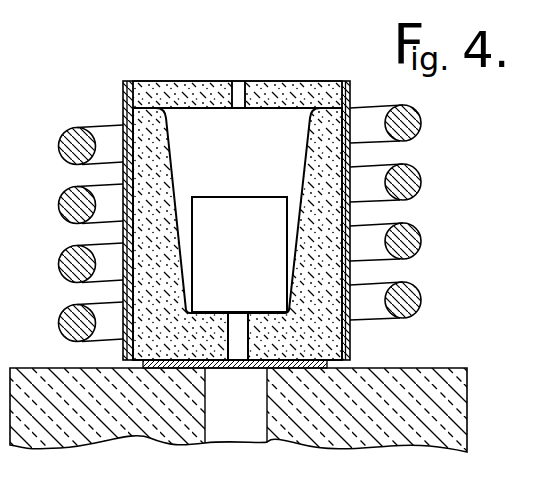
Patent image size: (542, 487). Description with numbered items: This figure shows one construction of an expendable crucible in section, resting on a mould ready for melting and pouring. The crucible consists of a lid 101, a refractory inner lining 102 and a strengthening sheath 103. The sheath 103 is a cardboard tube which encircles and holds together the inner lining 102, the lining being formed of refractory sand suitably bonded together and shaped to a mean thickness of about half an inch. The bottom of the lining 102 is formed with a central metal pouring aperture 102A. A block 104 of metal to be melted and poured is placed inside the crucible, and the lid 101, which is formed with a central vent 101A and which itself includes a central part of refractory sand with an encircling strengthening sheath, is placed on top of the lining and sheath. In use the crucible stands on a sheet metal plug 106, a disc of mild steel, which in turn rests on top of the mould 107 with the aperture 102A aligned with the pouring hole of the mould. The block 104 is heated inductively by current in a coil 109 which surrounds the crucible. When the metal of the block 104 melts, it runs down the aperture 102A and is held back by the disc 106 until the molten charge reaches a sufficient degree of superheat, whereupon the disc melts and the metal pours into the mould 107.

The lid 101 is at (176, 74).
The central vent 101A is at (243, 82).
The refractory inner lining 102 is at (148, 163).
The central metal pouring aperture 102A is at (235, 350).
The strengthening sheath 103 is at (349, 219).
The block of metal 104 is at (245, 252).
The sheet metal plug 106 is at (303, 365).
The mould 107 is at (433, 387).
The coil 109 is at (410, 303).